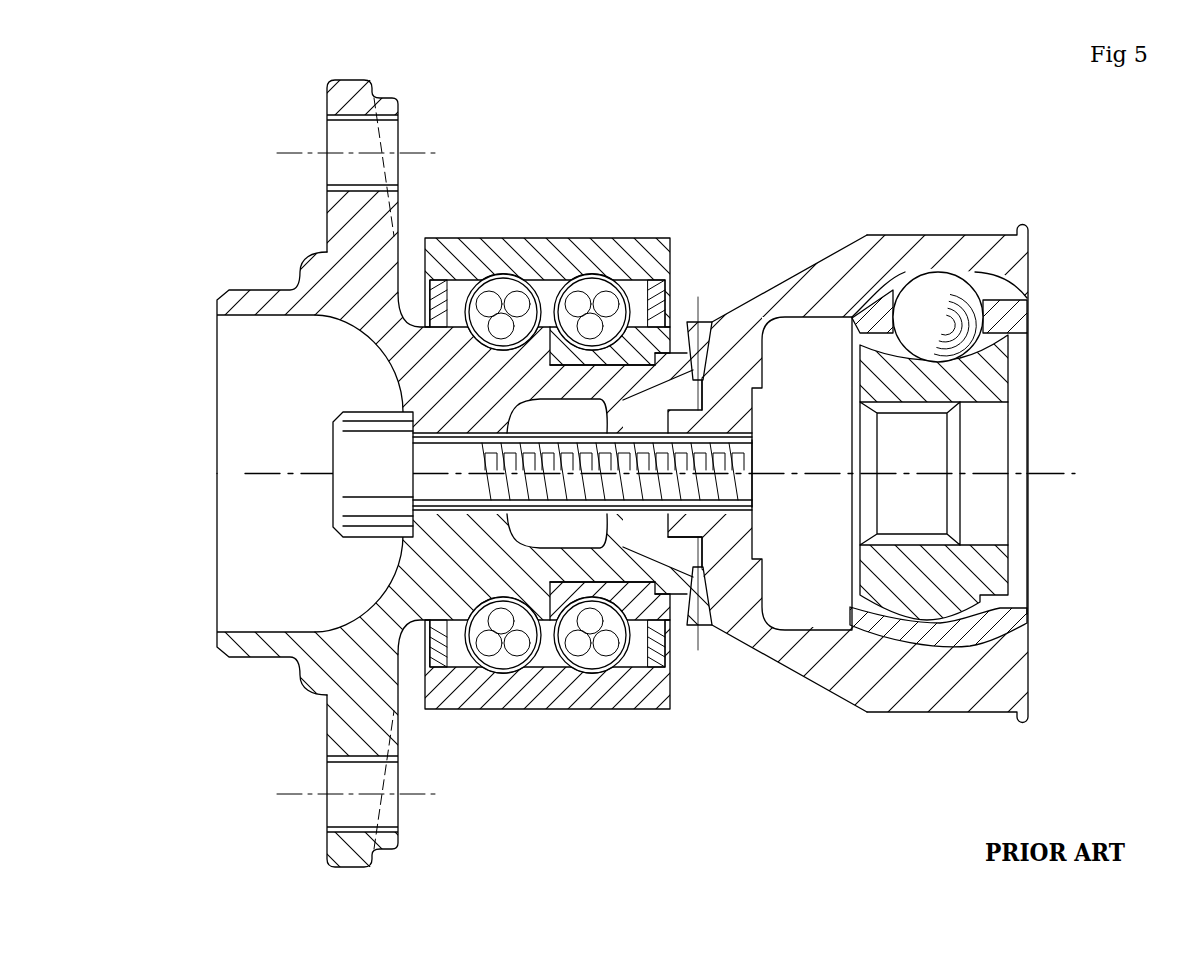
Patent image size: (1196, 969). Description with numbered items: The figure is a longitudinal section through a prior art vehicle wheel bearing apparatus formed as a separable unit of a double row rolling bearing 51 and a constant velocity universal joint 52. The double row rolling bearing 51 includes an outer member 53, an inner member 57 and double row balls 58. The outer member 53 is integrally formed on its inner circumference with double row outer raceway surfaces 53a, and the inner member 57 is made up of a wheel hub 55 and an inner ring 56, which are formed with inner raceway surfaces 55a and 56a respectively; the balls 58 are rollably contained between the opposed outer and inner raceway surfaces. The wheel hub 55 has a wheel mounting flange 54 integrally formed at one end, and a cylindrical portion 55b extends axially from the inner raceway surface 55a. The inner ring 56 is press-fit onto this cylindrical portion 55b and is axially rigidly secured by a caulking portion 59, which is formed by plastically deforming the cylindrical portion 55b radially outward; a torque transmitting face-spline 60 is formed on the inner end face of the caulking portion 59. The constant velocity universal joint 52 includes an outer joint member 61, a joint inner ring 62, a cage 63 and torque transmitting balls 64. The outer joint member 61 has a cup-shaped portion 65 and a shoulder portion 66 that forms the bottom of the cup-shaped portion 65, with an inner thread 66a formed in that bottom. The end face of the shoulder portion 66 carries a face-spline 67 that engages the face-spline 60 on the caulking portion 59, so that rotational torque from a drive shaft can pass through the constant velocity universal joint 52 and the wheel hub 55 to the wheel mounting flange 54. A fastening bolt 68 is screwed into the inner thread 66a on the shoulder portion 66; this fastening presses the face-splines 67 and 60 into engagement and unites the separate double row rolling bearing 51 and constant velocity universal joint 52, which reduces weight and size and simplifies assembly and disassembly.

The double row rolling bearing 51 is at (580, 425).
The constant velocity universal joint 52 is at (882, 418).
The outer member 53 is at (547, 416).
The outer raceway surface 53a is at (603, 283).
The wheel mounting flange 54 is at (357, 94).
The wheel hub 55 is at (462, 441).
The inner raceway surface 55a is at (477, 300).
The cylindrical portion 55b is at (588, 592).
The inner ring 56 is at (642, 414).
The inner raceway surface 56a is at (579, 348).
The inner member 57 is at (360, 393).
The balls 58 is at (577, 647).
The caulking portion 59 is at (722, 348).
The face-spline 60 is at (697, 570).
The outer joint member 61 is at (848, 439).
The joint inner ring 62 is at (943, 392).
The cage 63 is at (998, 330).
The torque transmitting balls 64 is at (943, 300).
The cup-shaped portion 65 is at (993, 237).
The shoulder portion 66 is at (788, 473).
The inner thread 66a is at (757, 508).
The face-spline 67 is at (687, 583).
The fastening bolt 68 is at (373, 485).